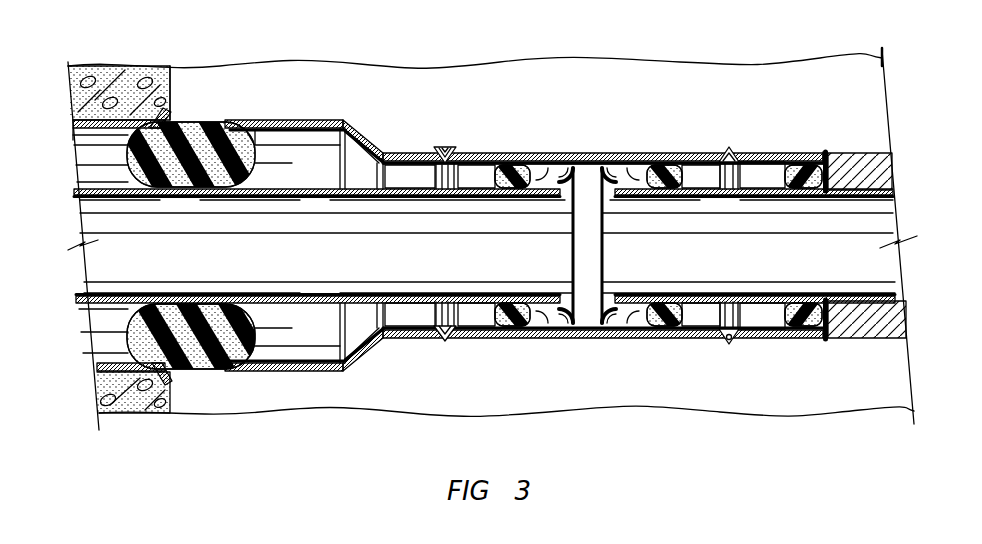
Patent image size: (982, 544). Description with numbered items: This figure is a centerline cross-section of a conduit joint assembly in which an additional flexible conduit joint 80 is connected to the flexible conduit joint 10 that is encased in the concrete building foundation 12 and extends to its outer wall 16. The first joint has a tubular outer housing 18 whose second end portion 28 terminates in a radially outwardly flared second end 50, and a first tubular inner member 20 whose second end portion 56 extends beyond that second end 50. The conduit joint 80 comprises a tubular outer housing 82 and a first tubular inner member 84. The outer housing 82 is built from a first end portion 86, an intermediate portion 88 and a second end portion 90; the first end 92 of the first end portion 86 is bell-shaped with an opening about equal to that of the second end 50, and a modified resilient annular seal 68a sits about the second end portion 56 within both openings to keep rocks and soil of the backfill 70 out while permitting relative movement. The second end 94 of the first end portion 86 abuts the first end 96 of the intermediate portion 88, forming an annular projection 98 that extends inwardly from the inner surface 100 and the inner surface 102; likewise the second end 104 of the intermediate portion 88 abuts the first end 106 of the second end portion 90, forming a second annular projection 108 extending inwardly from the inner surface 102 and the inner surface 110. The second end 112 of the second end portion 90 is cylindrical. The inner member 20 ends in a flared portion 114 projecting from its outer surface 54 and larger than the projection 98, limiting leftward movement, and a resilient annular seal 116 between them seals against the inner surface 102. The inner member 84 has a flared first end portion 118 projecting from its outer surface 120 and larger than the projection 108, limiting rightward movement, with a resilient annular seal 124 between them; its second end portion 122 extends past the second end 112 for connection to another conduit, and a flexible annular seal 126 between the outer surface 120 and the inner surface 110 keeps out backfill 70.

The flexible conduit joint 10 is at (70, 150).
The concrete building foundation 12 is at (103, 68).
The outer wall 16 is at (180, 70).
The tubular outer housing 18 is at (85, 112).
The first tubular inner member 20 is at (170, 198).
The second end portion 28 is at (123, 94).
The second end 50 is at (175, 375).
The outer surface 54 is at (340, 165).
The second end portion 56 is at (384, 191).
The resilient annular seal 68a is at (100, 158).
The backfill 70 is at (231, 77).
The flexible conduit joint 80 is at (825, 123).
The tubular outer housing 82 is at (545, 136).
The first tubular inner member 84 is at (747, 197).
The first end portion 86 is at (277, 120).
The intermediate portion 88 is at (500, 155).
The second end portion 90 is at (777, 150).
The first end 92 is at (232, 120).
The second end 94 is at (437, 147).
The first end 96 is at (450, 150).
The annular projection 98 is at (446, 192).
The inner surface 100 is at (410, 176).
The inner surface 102 is at (476, 176).
The second end 104 is at (725, 150).
The first end 106 is at (737, 153).
The second annular projection 108 is at (738, 190).
The inner surface 110 is at (762, 175).
The second end 112 is at (818, 338).
The flared portion 114 is at (583, 326).
The resilient annular seal 116 is at (533, 192).
The flared first end portion 118 is at (598, 326).
The outer surface 120 is at (637, 153).
The second end portion 122 is at (885, 294).
The resilient annular seal 124 is at (701, 176).
The flexible annular seal 126 is at (762, 316).